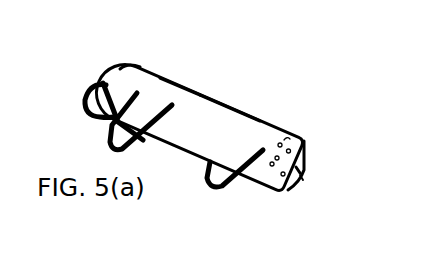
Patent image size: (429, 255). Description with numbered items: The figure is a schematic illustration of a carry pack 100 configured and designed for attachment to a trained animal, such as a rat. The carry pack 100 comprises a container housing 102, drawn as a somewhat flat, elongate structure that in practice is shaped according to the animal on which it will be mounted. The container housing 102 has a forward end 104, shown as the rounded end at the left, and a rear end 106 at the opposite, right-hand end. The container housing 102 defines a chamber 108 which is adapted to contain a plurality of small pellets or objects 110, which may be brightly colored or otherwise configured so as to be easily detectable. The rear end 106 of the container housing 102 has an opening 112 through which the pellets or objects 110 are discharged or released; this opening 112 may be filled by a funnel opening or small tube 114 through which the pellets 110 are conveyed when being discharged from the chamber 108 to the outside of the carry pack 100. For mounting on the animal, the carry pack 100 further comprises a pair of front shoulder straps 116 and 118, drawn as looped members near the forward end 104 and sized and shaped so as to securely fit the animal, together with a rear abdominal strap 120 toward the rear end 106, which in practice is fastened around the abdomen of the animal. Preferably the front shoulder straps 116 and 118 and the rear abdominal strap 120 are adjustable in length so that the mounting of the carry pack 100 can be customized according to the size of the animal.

The carry pack 100 is at (198, 106).
The container housing 102 is at (263, 121).
The forward end 104 is at (137, 79).
The rear end 106 is at (308, 152).
The chamber 108 is at (178, 100).
The pellets or objects 110 is at (284, 177).
The opening 112 is at (306, 173).
The funnel opening or small tube 114 is at (308, 184).
The front shoulder strap 116 is at (83, 100).
The front shoulder strap 118 is at (107, 138).
The rear abdominal strap 120 is at (232, 188).